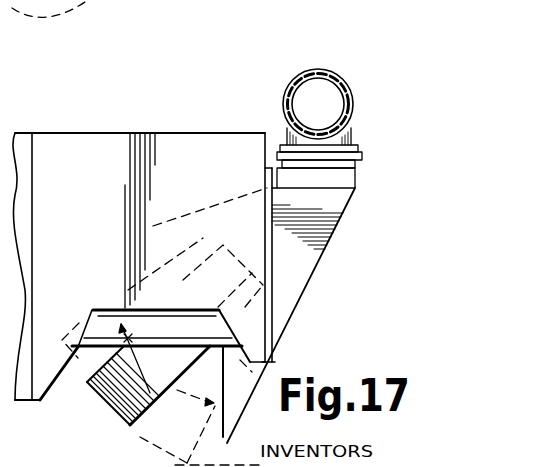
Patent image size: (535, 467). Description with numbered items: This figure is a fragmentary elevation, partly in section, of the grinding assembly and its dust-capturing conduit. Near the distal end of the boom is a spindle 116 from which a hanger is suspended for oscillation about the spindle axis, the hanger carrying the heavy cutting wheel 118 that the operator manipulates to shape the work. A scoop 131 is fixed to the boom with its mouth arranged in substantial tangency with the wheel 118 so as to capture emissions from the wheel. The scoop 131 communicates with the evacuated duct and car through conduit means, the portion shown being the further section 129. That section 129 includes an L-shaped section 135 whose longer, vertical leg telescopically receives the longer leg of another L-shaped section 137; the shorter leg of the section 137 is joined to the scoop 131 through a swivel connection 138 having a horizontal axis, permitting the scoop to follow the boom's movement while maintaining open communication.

The spindle 116 is at (106, 326).
The cutting wheel 118 is at (123, 420).
The further section 129 is at (12, 69).
The scoop 131 is at (305, 259).
The L-shaped section 135 is at (334, 77).
The L-shaped section 137 is at (346, 92).
The swivel connection 138 is at (362, 158).